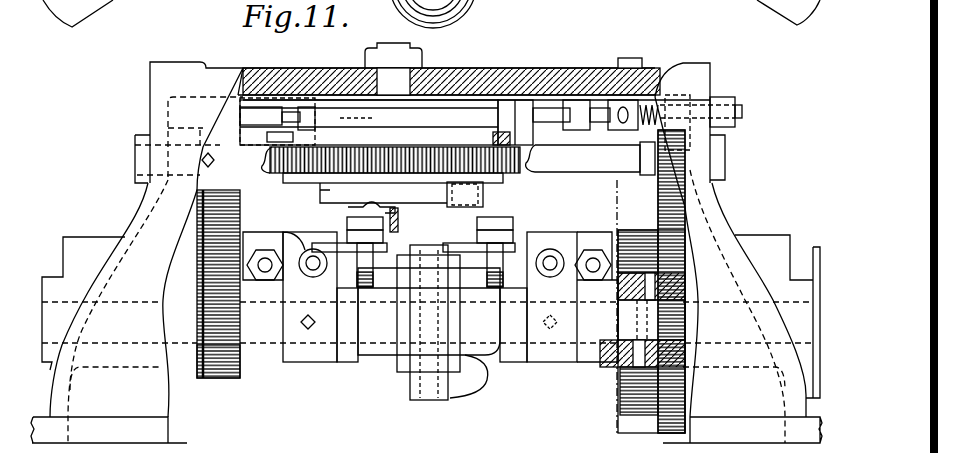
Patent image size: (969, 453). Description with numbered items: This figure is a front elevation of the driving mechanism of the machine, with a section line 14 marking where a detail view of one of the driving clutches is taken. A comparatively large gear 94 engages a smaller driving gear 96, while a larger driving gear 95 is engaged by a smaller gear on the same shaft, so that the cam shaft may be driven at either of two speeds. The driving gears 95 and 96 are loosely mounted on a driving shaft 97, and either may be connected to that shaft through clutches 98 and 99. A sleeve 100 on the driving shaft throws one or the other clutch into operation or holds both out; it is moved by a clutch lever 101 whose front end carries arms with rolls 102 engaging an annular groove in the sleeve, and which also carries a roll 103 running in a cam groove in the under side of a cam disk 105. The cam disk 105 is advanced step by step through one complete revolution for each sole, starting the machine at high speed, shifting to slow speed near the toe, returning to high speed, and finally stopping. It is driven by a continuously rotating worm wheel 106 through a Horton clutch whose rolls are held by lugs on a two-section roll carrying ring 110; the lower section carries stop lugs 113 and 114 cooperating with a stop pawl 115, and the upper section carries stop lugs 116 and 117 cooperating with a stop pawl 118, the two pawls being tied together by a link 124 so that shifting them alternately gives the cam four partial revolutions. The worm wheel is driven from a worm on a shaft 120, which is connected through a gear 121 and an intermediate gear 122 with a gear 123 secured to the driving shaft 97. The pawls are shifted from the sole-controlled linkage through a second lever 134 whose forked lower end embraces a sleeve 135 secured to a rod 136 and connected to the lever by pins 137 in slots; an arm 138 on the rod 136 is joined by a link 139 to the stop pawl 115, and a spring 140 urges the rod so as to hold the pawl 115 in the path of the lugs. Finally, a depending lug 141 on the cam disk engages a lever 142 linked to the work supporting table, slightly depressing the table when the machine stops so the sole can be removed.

The section line 14- 14 is at (645, 193).
The gear 94 is at (196, 214).
The driving gear 95 is at (633, 234).
The driving gear 96 is at (219, 380).
The driving shaft 97 is at (515, 338).
The clutch 98 is at (594, 246).
The clutch 99 is at (261, 246).
The sleeve 100 is at (383, 352).
The clutch lever 101 is at (464, 386).
The rolls 102 is at (431, 280).
The roll 103 is at (485, 195).
The cam disk 105 is at (320, 193).
The worm wheel 106 is at (272, 165).
The ring 110 is at (415, 130).
The stop lug 113 is at (538, 100).
The stop lug 114 is at (290, 137).
The stop pawl 115 is at (523, 117).
The stop lug 116 is at (368, 110).
The stop lug 117 is at (320, 68).
The stop pawl 118 is at (285, 68).
The shaft 120 is at (583, 158).
The gear 121 is at (722, 153).
The intermediate gear 122 is at (685, 204).
The gear 123 is at (685, 232).
The link 124 is at (443, 100).
The second lever 134 is at (643, 62).
The sleeve 135 is at (613, 98).
The rod 136 is at (742, 110).
The pins 137 is at (655, 95).
The arm 138 is at (577, 100).
The link 139 is at (553, 100).
The spring 140 is at (687, 100).
The depending lug 141 is at (365, 208).
The lever 142 is at (398, 222).